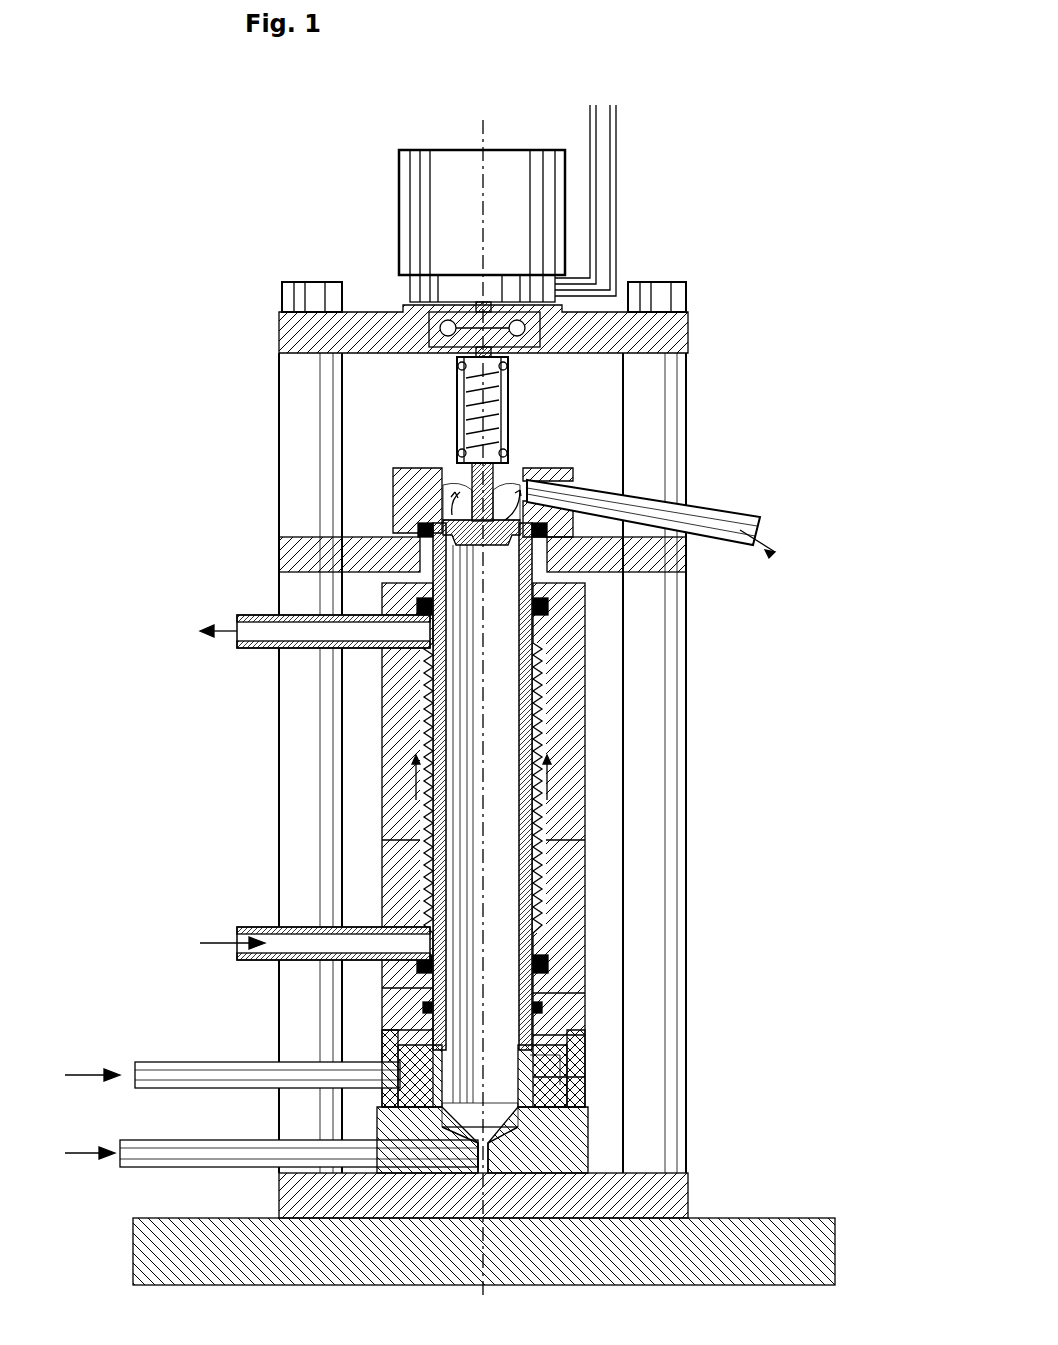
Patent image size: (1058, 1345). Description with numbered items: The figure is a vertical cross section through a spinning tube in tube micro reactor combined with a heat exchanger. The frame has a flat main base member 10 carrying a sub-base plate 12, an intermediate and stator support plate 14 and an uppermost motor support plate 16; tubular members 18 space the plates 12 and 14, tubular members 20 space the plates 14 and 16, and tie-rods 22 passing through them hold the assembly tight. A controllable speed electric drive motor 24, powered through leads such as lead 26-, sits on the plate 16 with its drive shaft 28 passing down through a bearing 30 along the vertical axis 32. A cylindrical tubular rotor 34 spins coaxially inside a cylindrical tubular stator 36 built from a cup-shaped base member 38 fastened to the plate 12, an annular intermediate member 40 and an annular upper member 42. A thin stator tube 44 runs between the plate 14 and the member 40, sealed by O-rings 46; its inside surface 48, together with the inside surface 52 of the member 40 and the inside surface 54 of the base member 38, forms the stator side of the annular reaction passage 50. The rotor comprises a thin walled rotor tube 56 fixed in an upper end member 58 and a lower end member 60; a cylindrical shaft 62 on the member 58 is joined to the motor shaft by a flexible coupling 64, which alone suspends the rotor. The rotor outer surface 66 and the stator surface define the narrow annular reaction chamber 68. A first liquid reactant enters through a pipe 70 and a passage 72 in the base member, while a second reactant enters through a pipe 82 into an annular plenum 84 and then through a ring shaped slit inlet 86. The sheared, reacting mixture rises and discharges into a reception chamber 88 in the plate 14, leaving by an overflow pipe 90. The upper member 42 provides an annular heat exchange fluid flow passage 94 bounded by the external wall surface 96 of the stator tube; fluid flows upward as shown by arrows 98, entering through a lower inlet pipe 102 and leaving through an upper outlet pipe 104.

The main base member 10 is at (800, 1240).
The sub-base plate 12 is at (300, 1205).
The intermediate and stator support plate 14 is at (300, 555).
The uppermost and motor support plate 16 is at (300, 333).
The tubular members 18 is at (295, 872).
The tubular members 20 is at (300, 395).
The tie-rods 22 is at (290, 292).
The electric drive motor 24 is at (455, 210).
The lead 26- is at (615, 170).
The drive shaft 28 is at (500, 352).
The bearing 30 is at (455, 352).
The axis of rotation 32 is at (478, 128).
The cylindrical tubular rotor 34 is at (500, 755).
The cylindrical tubular stator 36 is at (585, 837).
The cup-shaped base member 38 is at (562, 1152).
The annular intermediate member 40 is at (575, 1007).
The annular upper member 42 is at (560, 860).
The stator tube 44 is at (533, 708).
The O-rings 46 is at (425, 525).
The stator inside surface 48 is at (548, 665).
The annular reaction passage 50 is at (520, 885).
The inside surface of intermediate member 52 is at (435, 1035).
The inside surface of base member opening 54 is at (590, 1078).
The rotor tube 56 is at (540, 905).
The upper end member 58 is at (470, 486).
The lower end member 60 is at (590, 1120).
The cylindrical shaft 62 is at (495, 485).
The flexible coupling 64 is at (490, 410).
The rotor outer surface 66 is at (430, 752).
The annular reaction chamber 68 is at (430, 840).
The pipe 70 is at (190, 1150).
The passage 72 is at (470, 1150).
The pipe 82 is at (185, 1075).
The annular plenum 84 is at (425, 1030).
The slit inlet 86 is at (580, 1035).
The reception chamber 88 is at (465, 510).
The overflow pipe 90 is at (690, 500).
The heat exchange fluid flow passage 94 is at (425, 700).
The external cylindrical wall surface 96 is at (500, 905).
The arrows 98 is at (553, 793).
The lower inlet pipe 102 is at (262, 935).
The upper outlet pipe 104 is at (265, 622).